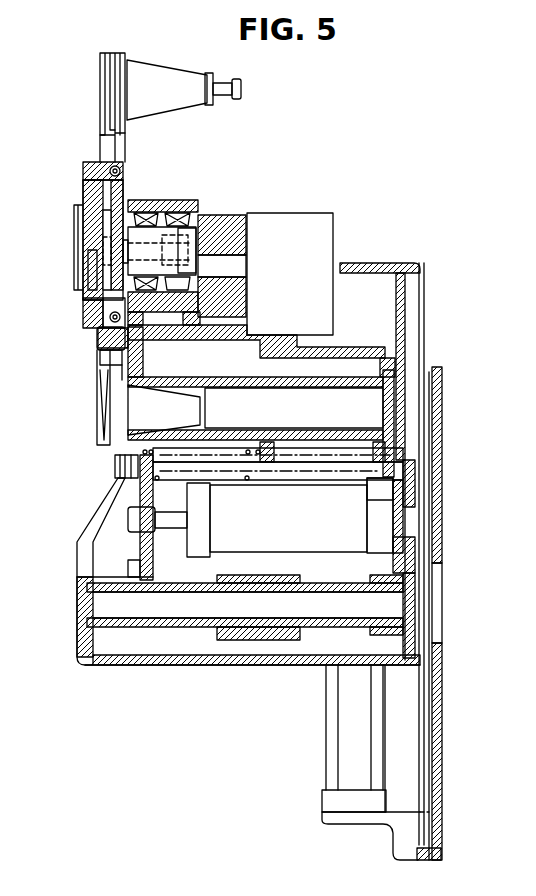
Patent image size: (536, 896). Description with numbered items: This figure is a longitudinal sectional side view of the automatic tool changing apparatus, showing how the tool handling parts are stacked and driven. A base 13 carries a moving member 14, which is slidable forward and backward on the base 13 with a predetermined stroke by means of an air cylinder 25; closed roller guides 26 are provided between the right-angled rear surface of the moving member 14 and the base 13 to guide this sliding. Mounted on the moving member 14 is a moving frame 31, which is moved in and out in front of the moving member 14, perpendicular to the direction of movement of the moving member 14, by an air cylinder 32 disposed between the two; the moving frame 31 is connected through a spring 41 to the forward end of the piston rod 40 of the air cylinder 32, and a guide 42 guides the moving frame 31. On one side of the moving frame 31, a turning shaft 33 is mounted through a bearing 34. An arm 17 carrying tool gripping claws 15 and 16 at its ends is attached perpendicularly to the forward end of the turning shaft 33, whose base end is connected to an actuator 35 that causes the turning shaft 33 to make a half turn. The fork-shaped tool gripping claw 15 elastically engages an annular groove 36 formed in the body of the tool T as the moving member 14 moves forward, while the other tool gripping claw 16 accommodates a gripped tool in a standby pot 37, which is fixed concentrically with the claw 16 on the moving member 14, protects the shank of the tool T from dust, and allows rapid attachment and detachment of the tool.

The tool T is at (127, 59).
The annular groove 36 is at (103, 51).
The tool gripping claw 15 is at (101, 143).
The arm 17 is at (82, 205).
The turning shaft 33 is at (205, 215).
The bearing 34 is at (150, 240).
The moving frame 31 is at (244, 216).
The actuator 35 is at (312, 232).
The moving member 14 is at (402, 264).
The closed roller guides 26 is at (425, 767).
The base 13 is at (442, 548).
The standby pot 37 is at (337, 373).
The tool gripping claw 16 is at (97, 410).
The air cylinder 32 is at (342, 522).
The spring 41 is at (254, 480).
The piston rod 40 is at (165, 522).
The guide 42 is at (253, 637).
The air cylinder 25 is at (332, 757).